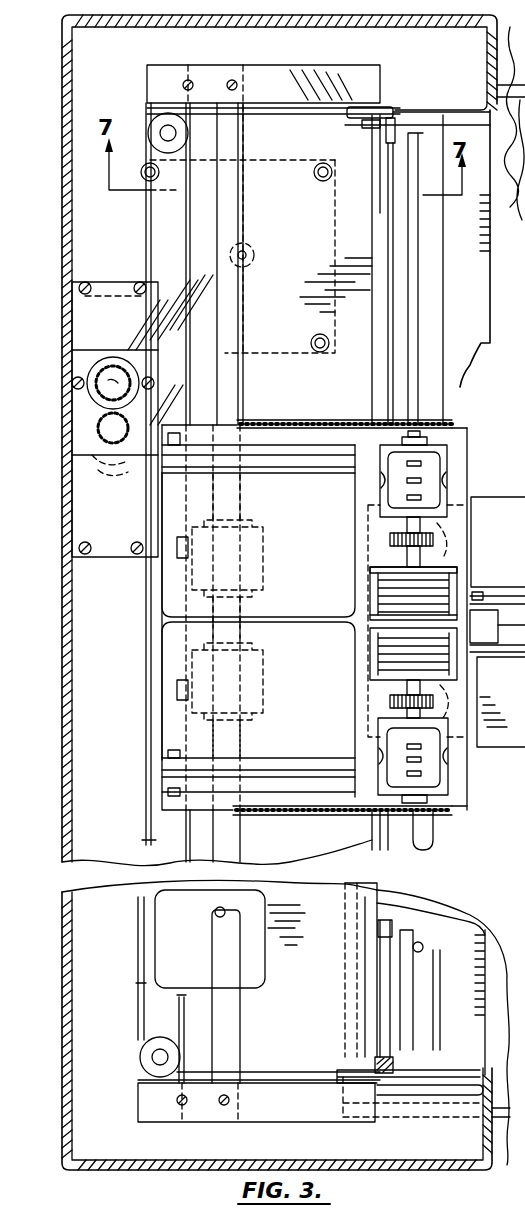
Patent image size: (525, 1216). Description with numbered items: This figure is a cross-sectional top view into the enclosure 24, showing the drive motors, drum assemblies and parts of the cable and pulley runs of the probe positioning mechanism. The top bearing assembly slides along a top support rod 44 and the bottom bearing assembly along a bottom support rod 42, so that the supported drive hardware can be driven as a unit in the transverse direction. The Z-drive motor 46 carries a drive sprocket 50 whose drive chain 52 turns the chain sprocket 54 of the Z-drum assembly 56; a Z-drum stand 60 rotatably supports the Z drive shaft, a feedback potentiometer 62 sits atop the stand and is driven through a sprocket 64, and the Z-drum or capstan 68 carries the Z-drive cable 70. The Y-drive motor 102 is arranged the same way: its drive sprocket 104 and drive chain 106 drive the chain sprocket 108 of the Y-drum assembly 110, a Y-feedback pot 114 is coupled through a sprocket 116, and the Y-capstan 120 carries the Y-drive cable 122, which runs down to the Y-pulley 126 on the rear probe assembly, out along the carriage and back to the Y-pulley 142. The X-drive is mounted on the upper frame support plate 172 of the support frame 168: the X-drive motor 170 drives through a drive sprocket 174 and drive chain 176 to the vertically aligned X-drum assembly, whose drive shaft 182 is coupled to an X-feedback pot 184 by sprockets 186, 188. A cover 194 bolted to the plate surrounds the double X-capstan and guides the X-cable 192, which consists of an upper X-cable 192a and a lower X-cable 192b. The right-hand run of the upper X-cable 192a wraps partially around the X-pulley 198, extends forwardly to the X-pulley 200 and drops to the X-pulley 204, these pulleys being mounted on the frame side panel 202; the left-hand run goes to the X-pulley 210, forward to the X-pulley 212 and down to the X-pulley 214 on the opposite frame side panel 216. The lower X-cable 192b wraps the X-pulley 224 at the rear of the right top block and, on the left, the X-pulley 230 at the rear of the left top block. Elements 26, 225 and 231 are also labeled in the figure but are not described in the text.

The enclosure 24 is at (63, 88).
The bracket 26 is at (437, 902).
The bottom support rod 42 is at (433, 290).
The top support rod 44 is at (232, 208).
The Z-drive motor 46 is at (165, 657).
The drive sprocket 50 is at (270, 797).
The drive chain 52 is at (313, 818).
The chain sprocket 54 is at (450, 812).
The Z-drum assembly 56 is at (362, 664).
The Z-drum stand 60 is at (447, 768).
The feedback potentiometer 62 is at (427, 778).
The sprocket 64 is at (392, 698).
The Z-drum or capstan 68 is at (370, 640).
The Z-drive cable 70 is at (453, 658).
The Y-drive motor 102 is at (168, 585).
The drive sprocket 104 is at (270, 417).
The drive chain 106 is at (318, 417).
The chain sprocket 108 is at (427, 435).
The Y-drum assembly 110 is at (362, 527).
The Y-feedback pot 114 is at (430, 470).
The sprocket 116 is at (390, 540).
The Y-capstan 120 is at (385, 577).
The Y-drive cable 122 is at (377, 588).
The Y-pulley 126 is at (490, 598).
The Y-pulley 142 is at (501, 702).
The support frame 168 is at (483, 267).
The X-drive motor 170 is at (350, 173).
The upper frame support plate 172 is at (157, 222).
The drive sprocket 174 is at (255, 262).
The drive chain 176 is at (230, 317).
The drive shaft 182 is at (88, 478).
The X-feedback pot 184 is at (100, 360).
The sprocket 186 is at (78, 383).
The sprocket 188 is at (108, 462).
The X-cable 192 is at (383, 953).
The upper X-cable 192a is at (312, 128).
The lower X-cable 192b is at (130, 212).
The cover 194 is at (101, 282).
The X-pulley 198 is at (155, 118).
The X-pulley 200 is at (370, 107).
The top plate 202 is at (270, 70).
The X-pulley 204 is at (395, 120).
The X-pulley 210 is at (143, 1060).
The X-pulley 212 is at (343, 1058).
The X-pulley 214 is at (413, 1093).
The frame side panel 216 is at (270, 1117).
The X-pulley 224 is at (175, 556).
The drum flange 225 is at (368, 562).
The X-pulley 230 is at (178, 698).
The lower motor unit 231 is at (272, 698).